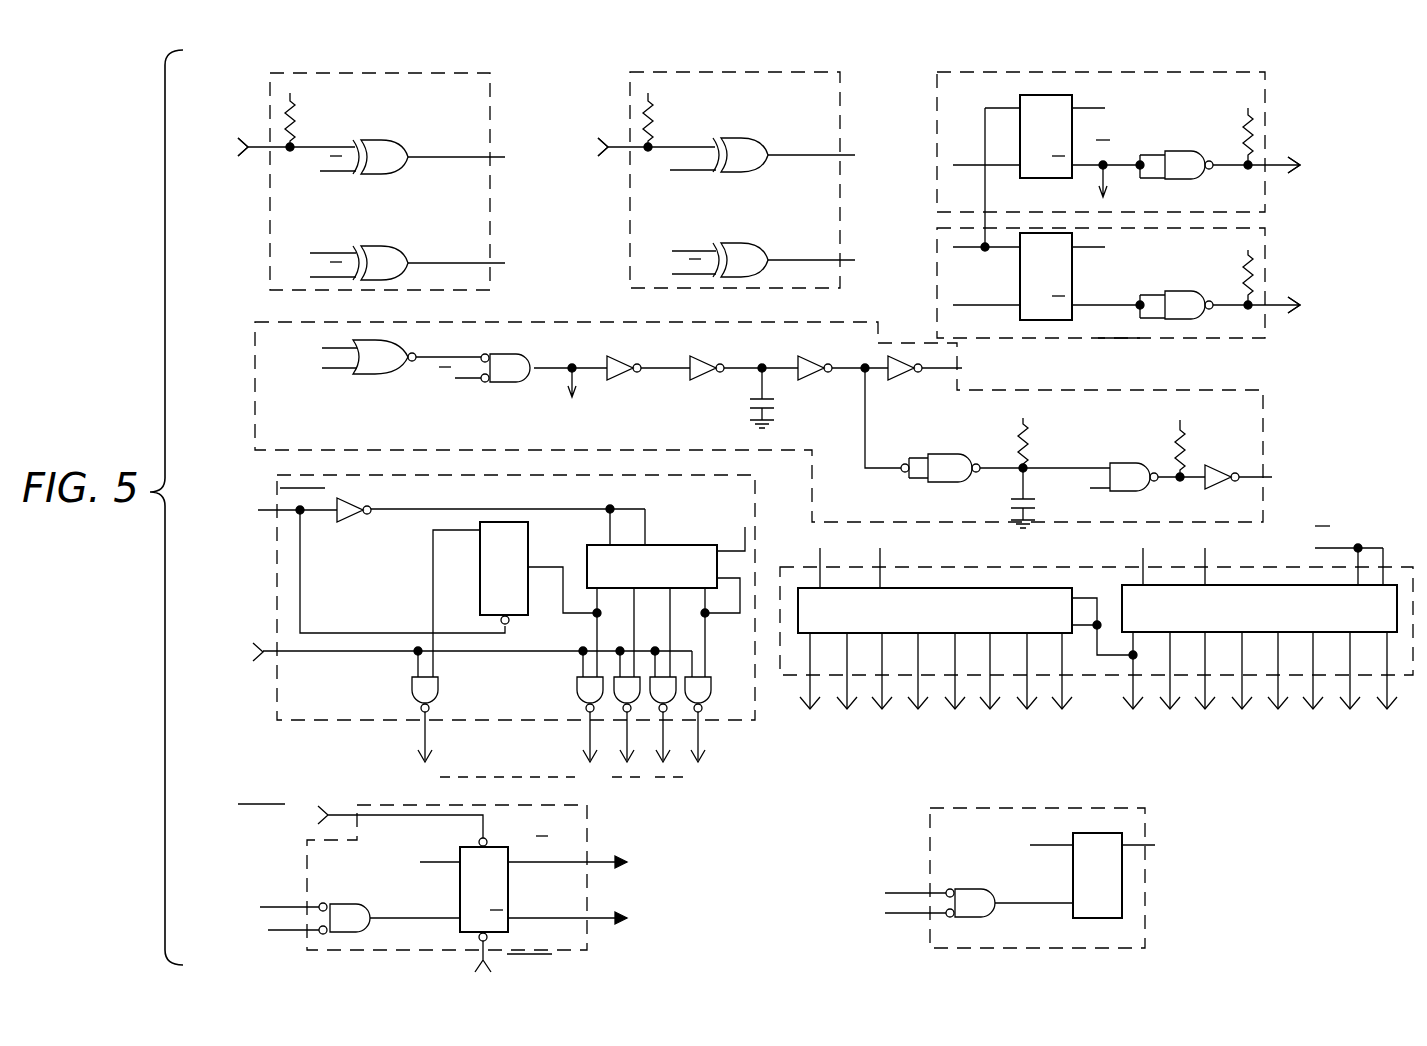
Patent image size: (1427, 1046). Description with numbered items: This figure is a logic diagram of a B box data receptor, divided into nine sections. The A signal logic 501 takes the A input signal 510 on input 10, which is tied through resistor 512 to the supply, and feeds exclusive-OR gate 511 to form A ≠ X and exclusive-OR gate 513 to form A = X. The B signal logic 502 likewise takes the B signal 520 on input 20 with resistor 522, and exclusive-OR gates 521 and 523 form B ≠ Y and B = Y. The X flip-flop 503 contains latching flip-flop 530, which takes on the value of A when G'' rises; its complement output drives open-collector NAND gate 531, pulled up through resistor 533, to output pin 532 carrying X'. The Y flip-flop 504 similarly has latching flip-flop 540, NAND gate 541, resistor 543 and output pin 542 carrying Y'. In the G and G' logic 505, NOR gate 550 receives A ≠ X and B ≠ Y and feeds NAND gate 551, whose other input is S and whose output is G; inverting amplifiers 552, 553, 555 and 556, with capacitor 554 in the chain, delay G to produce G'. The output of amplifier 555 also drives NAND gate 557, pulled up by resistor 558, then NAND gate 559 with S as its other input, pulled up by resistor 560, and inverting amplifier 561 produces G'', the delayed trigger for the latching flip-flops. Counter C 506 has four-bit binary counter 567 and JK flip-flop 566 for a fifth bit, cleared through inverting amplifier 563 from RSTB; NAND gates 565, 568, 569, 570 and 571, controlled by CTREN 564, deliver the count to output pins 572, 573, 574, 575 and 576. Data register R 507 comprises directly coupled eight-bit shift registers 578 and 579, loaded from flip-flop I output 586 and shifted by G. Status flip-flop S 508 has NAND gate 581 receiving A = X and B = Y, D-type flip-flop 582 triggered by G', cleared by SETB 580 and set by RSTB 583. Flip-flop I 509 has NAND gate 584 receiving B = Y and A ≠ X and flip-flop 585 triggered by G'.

The A signal logic 501 is at (385, 70).
The input line 10 is at (282, 147).
The A input signal 510 is at (244, 140).
The exclusive-OR gate 511 is at (383, 138).
The pull-up resistor 512 is at (297, 108).
The exclusive-OR gate 513 is at (390, 246).
The B signal logic 502 is at (798, 70).
The input line 20 is at (643, 147).
The B signal 520 is at (604, 140).
The exclusive-OR gate 521 is at (743, 136).
The pull-up resistor 522 is at (655, 108).
The exclusive-OR gate 523 is at (733, 243).
The X flip-flop 503 is at (1050, 72).
The flip-flop 530 is at (1020, 100).
The open-collector output NAND gate 531 is at (1180, 150).
The output pin 532 is at (1302, 163).
The 220 ohm resistor 533 is at (1240, 108).
The Y flip-flop 504 is at (1265, 258).
The latching-type flip-flop 540 is at (1074, 282).
The open-collector output NAND gate 541 is at (1198, 318).
The output pin 542 is at (1315, 282).
The 220 ohm resistor 543 is at (1242, 252).
The G and G' logic 505 is at (520, 322).
The NOR gate 550 is at (397, 340).
The NAND gate 551 is at (515, 352).
The inverting amplifier 552 is at (608, 355).
The inverting amplifier 553 is at (694, 355).
The capacitor 554 is at (752, 403).
The inverting amplifier 555 is at (804, 355).
The inverting amplifier 556 is at (888, 378).
The NAND gate 557 is at (950, 452).
The resistor 558 is at (1020, 446).
The NAND gate 559 is at (1132, 460).
The resistor 560 is at (1188, 445).
The inverting amplifier 561 is at (1222, 490).
The counter C 506 is at (277, 562).
The inverting amplifier 563 is at (362, 504).
The CTREN signal 564 is at (258, 648).
The NAND gate 565 is at (440, 690).
The JK flip-flop 566 is at (475, 597).
The four-bit binary counter 567 is at (678, 545).
The NAND gate 568 is at (578, 675).
The NAND gate 569 is at (620, 675).
The NAND gate 570 is at (680, 670).
The NAND gate 571 is at (710, 690).
The output pin 572 is at (428, 753).
The output pin 573 is at (585, 753).
The output pin 574 is at (630, 758).
The output pin 575 is at (666, 758).
The output pin 576 is at (702, 757).
The data register R 507 is at (890, 565).
The 8-bit shift register 578 is at (985, 586).
The 8-bit shift register 579 is at (1236, 586).
The status flip-flop S 508 is at (307, 863).
The SETB signal 580 is at (320, 812).
The NAND gate 581 is at (370, 900).
The D-type edge-triggered flip-flop 582 is at (460, 893).
The RSTB signal 583 is at (478, 968).
The flip-flop I 509 is at (1030, 808).
The NAND gate 584 is at (998, 862).
The flip-flop 585 is at (1073, 880).
The flip-flop I output 586 is at (1148, 845).